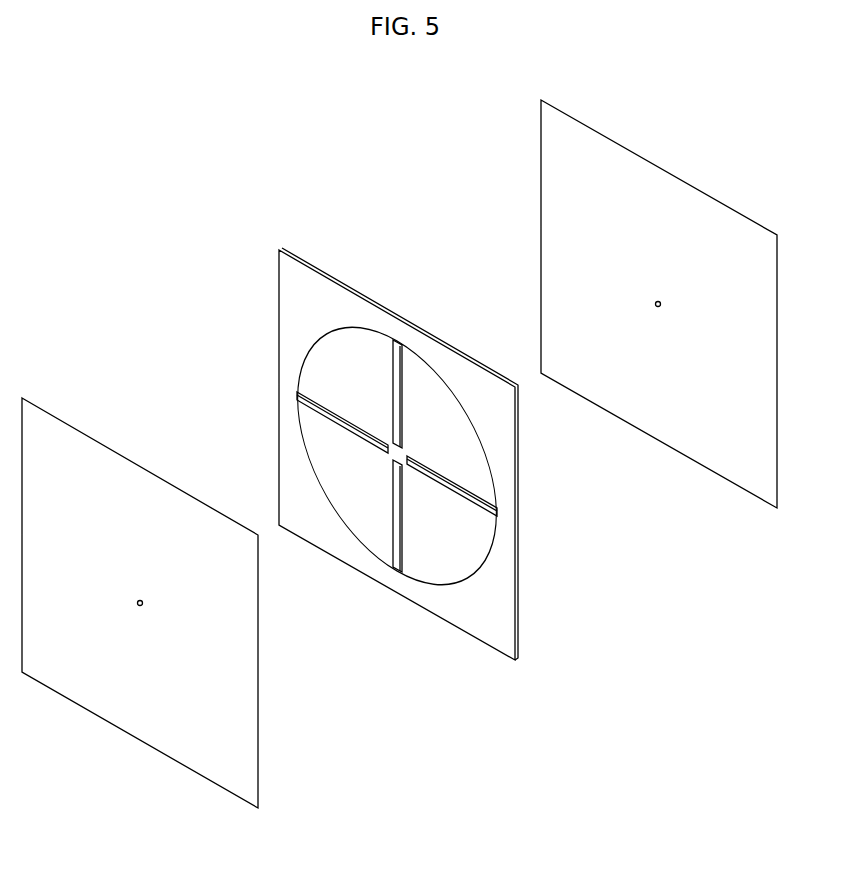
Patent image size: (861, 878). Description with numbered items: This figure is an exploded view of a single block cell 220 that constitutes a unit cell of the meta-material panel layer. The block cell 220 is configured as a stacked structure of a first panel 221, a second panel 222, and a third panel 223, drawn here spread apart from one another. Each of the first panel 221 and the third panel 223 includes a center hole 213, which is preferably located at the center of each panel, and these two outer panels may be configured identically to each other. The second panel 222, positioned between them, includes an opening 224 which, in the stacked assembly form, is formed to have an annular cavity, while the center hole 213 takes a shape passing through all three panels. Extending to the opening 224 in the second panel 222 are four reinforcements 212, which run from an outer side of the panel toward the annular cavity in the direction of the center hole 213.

The block cell 220 is at (800, 524).
The first panel 221 is at (83, 440).
The second panel 222 is at (288, 287).
The third panel 223 is at (552, 157).
The reinforcement 212 is at (335, 419).
The center hole 213 is at (139, 605).
The opening 224 is at (437, 553).